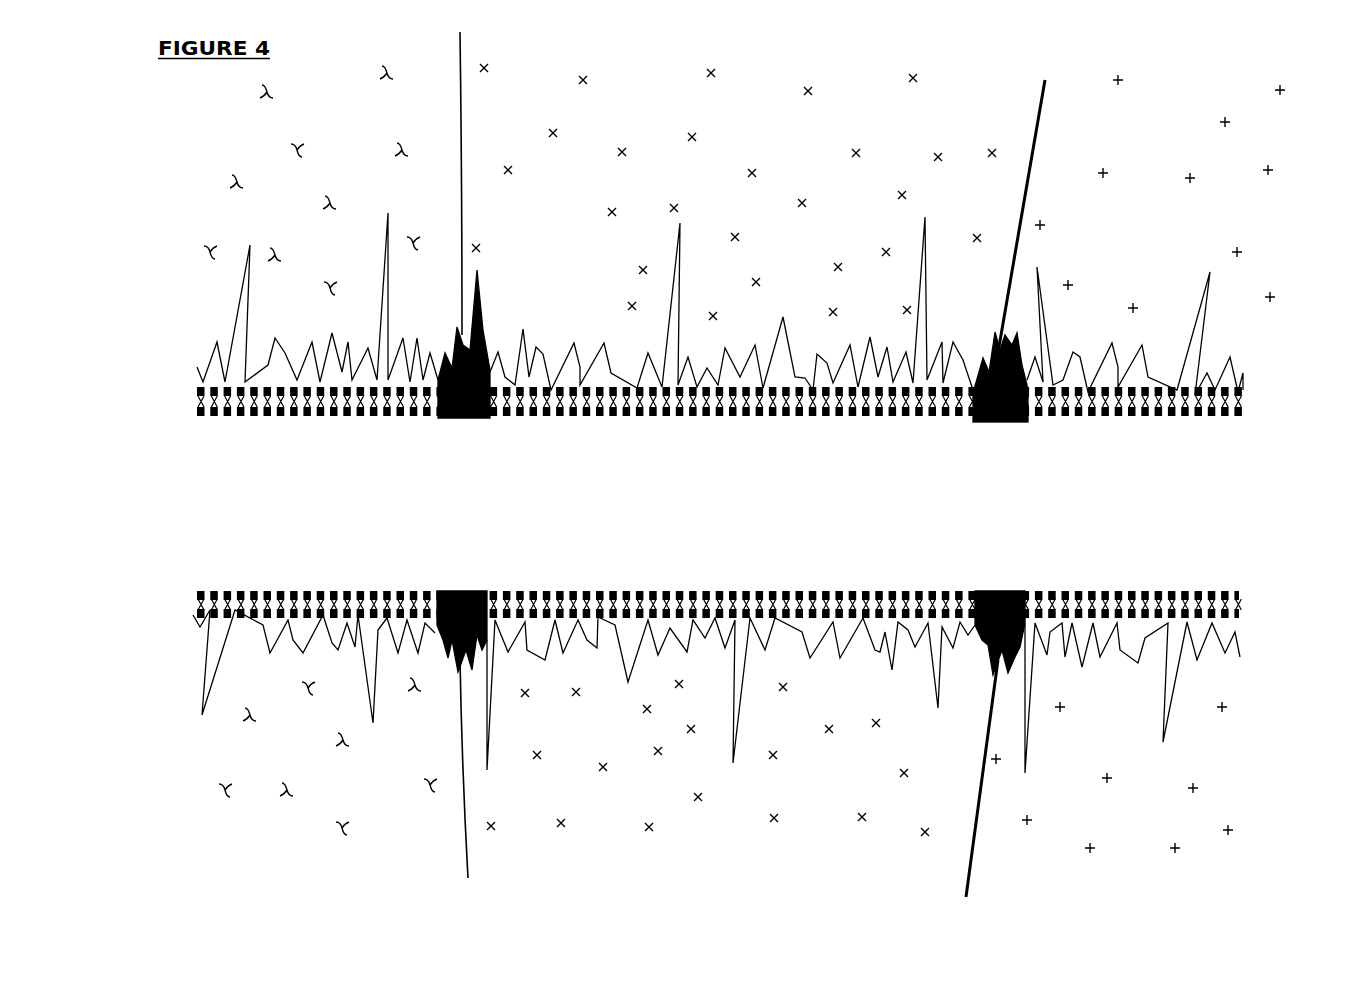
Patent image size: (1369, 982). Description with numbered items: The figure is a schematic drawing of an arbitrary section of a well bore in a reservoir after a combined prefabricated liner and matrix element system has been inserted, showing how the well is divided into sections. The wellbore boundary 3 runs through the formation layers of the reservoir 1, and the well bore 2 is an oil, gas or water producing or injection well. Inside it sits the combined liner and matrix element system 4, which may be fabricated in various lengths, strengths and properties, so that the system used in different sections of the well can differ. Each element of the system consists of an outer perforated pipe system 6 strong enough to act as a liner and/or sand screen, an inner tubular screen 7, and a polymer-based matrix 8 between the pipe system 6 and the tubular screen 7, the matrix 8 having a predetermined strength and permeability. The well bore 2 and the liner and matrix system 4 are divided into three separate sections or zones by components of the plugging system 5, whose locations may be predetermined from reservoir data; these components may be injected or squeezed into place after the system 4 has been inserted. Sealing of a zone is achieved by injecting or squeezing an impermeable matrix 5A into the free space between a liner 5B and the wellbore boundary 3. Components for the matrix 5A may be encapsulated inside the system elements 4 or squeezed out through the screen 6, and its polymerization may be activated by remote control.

The reservoir 1 is at (852, 198).
The well bore 2 is at (259, 494).
The wellbore boundary 3 is at (1193, 330).
The combined liner and matrix element system 4 is at (729, 484).
The plugging system 5 is at (752, 472).
The impermeable matrix 5A is at (993, 360).
The liner 5B is at (1013, 424).
The outer perforated pipe system 6 is at (1243, 397).
The inner tubular screen 7 is at (1226, 422).
The matrix 8 is at (1235, 604).